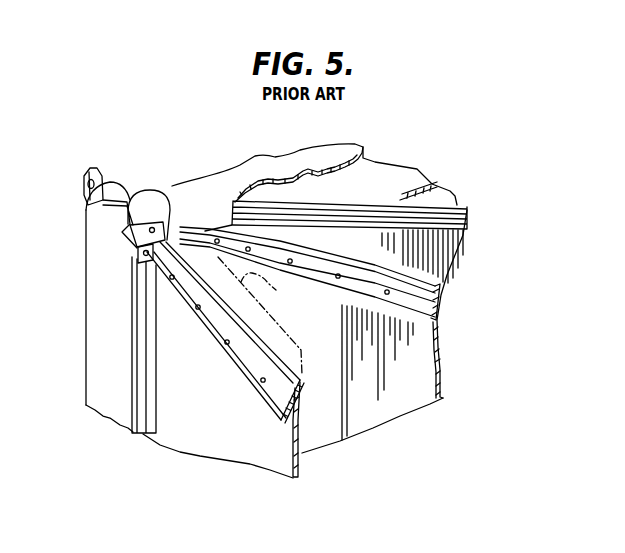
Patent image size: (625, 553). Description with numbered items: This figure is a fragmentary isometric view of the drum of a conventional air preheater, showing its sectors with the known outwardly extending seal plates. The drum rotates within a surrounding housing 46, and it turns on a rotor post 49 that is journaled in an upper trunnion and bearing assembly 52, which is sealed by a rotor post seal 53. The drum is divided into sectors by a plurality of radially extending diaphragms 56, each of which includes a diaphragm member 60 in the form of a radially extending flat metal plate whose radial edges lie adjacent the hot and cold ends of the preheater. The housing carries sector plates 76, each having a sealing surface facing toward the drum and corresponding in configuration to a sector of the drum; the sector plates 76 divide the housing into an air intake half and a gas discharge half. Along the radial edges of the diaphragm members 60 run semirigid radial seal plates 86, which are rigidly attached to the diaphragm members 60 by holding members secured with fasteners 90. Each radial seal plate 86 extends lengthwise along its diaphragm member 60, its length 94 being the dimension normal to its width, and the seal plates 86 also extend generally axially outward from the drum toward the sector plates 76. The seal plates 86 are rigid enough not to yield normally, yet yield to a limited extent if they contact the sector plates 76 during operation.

The housing 46 is at (208, 187).
The rotor post 49 is at (132, 316).
The upper trunnion and bearing assembly 52 is at (142, 207).
The rotor post seal 53 is at (137, 250).
The diaphragm 56 is at (470, 239).
The diaphragm member 60 is at (308, 318).
The sector plate 76 is at (373, 183).
The radial seal plate 86 is at (467, 207).
The fastener 90 is at (313, 267).
The length 94 is at (261, 316).